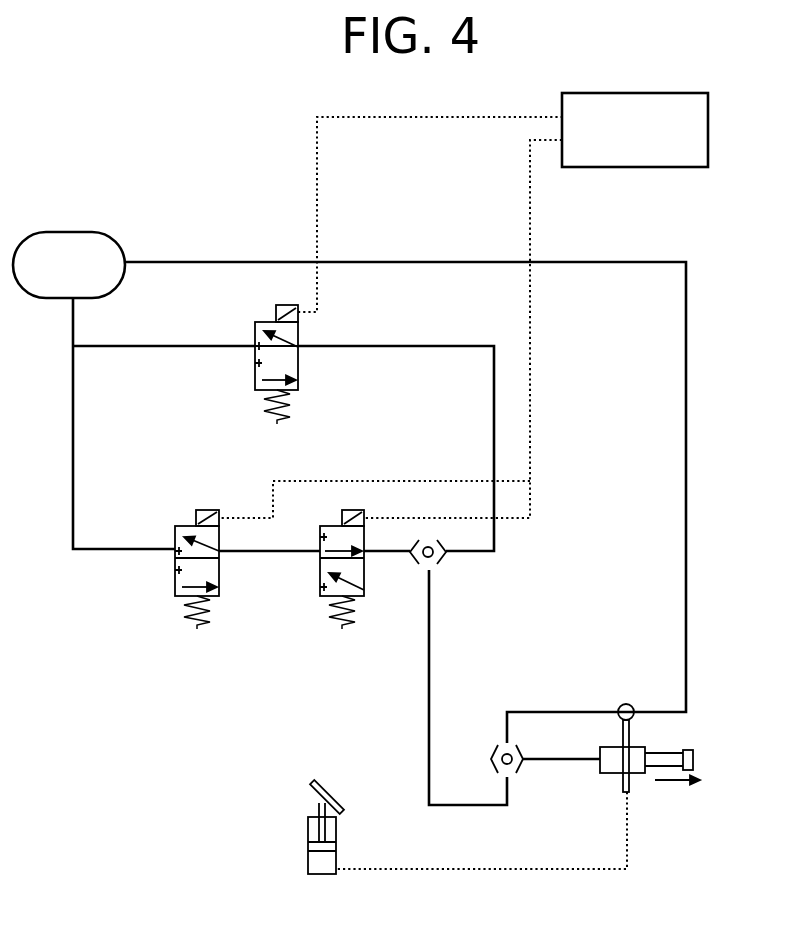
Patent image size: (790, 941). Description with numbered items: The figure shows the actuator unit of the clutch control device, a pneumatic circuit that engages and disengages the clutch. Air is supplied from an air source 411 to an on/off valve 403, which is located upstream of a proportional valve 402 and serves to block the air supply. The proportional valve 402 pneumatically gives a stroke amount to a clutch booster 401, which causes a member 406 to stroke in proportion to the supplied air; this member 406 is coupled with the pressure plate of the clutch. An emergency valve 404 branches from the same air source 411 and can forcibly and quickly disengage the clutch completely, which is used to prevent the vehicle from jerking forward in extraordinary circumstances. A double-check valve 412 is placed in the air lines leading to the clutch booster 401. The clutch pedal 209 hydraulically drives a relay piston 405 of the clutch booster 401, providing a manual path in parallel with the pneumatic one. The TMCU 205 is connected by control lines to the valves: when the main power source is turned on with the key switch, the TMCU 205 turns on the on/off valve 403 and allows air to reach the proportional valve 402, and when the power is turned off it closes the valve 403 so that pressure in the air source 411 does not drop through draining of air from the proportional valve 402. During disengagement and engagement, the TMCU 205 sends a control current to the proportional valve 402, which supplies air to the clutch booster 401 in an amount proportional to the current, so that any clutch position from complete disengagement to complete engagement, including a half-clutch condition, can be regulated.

The air source 411 is at (73, 232).
The TMCU 205 is at (632, 167).
The emergency valve 404 is at (299, 367).
The on/off valve 403 is at (175, 578).
The proportional valve 402 is at (320, 580).
The double-check valve 412 is at (437, 558).
The relay piston 405 is at (630, 733).
The member 406 is at (693, 762).
The clutch booster 401 is at (662, 832).
The clutch pedal 209 is at (323, 792).